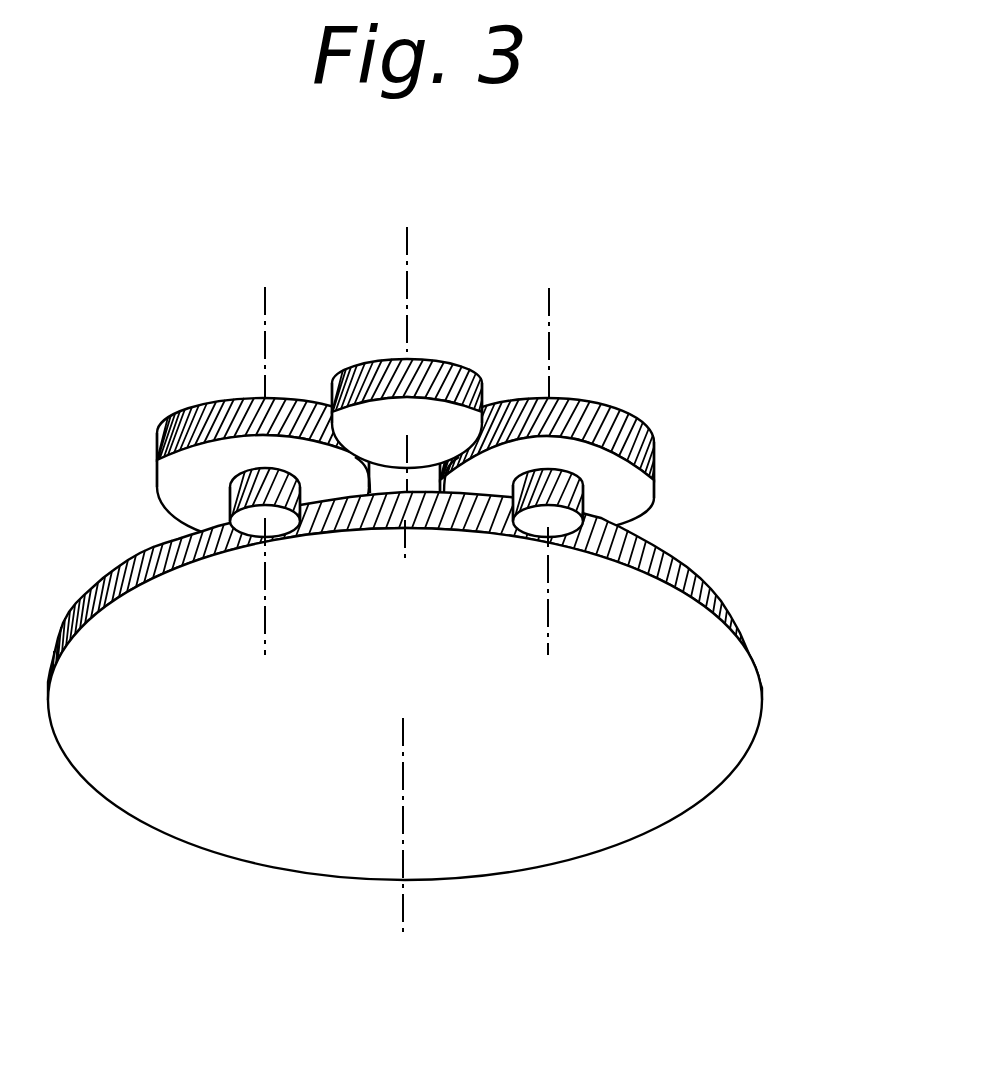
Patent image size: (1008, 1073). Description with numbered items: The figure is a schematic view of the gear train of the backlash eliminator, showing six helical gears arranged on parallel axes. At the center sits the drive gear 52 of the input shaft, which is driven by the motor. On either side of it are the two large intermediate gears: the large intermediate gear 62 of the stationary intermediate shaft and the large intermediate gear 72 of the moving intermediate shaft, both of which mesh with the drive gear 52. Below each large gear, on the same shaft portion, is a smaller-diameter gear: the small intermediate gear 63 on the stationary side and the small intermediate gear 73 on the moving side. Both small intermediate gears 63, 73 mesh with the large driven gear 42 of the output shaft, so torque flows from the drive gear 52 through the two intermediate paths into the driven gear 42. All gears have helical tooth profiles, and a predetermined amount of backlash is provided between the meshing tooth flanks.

The driven gear 42 is at (735, 735).
The drive gear 52 is at (447, 373).
The large intermediate gear 62 is at (205, 413).
The small intermediate gear 63 is at (228, 500).
The large intermediate gear 72 is at (622, 425).
The small intermediate gear 73 is at (567, 493).